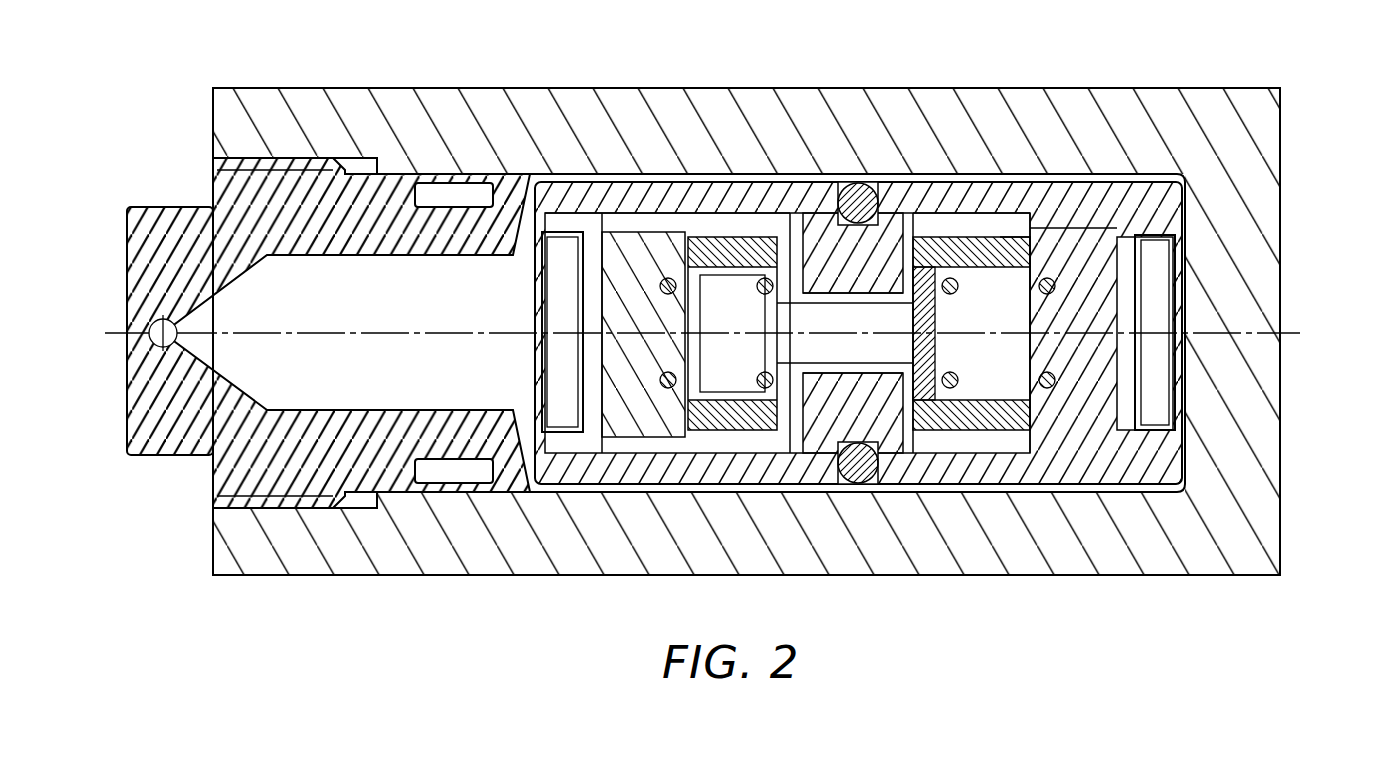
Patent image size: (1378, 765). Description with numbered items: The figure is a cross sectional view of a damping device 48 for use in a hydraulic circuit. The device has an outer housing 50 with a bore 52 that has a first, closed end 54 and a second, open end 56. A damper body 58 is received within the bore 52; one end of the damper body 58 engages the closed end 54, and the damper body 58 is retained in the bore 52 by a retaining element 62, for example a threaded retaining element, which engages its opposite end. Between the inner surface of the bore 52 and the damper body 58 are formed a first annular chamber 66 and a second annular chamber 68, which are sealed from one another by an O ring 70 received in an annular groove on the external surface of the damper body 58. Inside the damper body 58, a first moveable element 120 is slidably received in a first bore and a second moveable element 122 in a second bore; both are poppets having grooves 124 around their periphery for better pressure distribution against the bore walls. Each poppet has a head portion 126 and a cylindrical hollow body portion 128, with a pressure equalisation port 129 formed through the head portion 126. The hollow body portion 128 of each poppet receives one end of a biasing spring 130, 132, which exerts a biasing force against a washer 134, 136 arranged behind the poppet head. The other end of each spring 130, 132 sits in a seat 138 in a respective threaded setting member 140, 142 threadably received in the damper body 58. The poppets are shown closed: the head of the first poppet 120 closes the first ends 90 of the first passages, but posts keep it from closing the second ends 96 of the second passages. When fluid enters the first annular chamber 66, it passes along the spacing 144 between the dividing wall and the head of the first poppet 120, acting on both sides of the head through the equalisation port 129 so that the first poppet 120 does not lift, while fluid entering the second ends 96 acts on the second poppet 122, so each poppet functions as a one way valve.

The damping device 48 is at (232, 597).
The outer housing 50 is at (1237, 560).
The bore 52 is at (445, 188).
The closed end 54 is at (1180, 250).
The open end 56 is at (213, 170).
The damper body 58 is at (573, 470).
The retaining element 62 is at (160, 455).
The first annular chamber 66 is at (1100, 178).
The second annular chamber 68 is at (688, 180).
The O ring 70 is at (857, 192).
The first ends of first passages 90 is at (930, 322).
The second ends of second passages 96 is at (932, 287).
The first moveable element 120 is at (960, 232).
The second moveable element 122 is at (735, 232).
The grooves 124 is at (712, 428).
The head portion 126 is at (903, 205).
The cylindrical hollow body portion 128 is at (1010, 232).
The pressure equalisation port 129 is at (772, 372).
The first biasing spring 130 is at (1050, 418).
The second biasing spring 132 is at (648, 420).
The first washer 134 is at (915, 425).
The second washer 136 is at (768, 398).
The seat 138 is at (665, 318).
The first threaded setting member 140 is at (1097, 298).
The second threaded setting member 142 is at (608, 292).
The spacing 144 is at (893, 430).